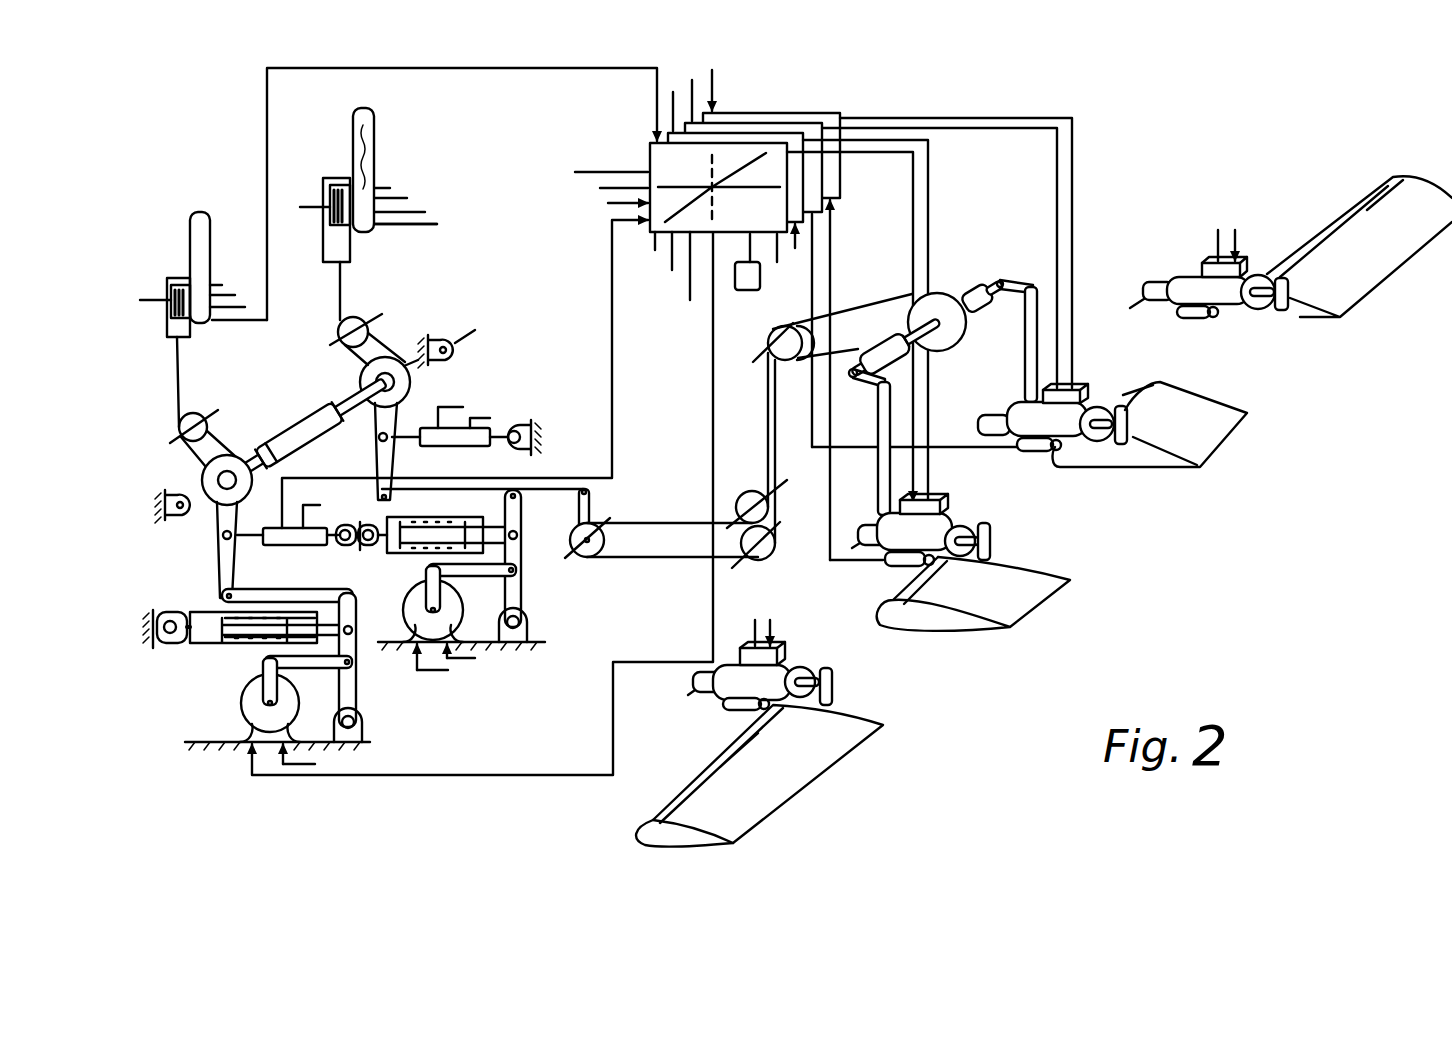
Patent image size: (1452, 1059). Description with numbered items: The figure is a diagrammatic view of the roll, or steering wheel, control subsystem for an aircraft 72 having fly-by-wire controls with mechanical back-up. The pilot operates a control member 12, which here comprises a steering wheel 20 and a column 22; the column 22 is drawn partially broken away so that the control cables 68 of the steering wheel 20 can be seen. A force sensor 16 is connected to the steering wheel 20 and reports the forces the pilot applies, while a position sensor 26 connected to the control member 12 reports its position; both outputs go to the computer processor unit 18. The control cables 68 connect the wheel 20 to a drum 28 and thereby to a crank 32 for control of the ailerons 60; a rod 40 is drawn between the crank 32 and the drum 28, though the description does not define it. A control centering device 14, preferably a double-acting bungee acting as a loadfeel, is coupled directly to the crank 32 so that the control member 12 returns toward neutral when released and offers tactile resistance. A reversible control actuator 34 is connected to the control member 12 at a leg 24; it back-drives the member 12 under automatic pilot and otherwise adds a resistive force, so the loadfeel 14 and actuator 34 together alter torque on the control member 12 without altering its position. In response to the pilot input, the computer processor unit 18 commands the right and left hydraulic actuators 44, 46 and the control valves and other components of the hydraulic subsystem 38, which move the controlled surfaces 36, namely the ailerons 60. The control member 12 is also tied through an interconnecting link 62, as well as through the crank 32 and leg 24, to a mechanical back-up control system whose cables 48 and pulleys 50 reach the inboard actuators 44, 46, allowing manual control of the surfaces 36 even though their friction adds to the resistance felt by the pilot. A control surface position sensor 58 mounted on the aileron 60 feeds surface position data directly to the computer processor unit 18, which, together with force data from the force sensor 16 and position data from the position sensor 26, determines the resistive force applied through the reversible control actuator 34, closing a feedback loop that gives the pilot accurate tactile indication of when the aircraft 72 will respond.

The control member 12 is at (382, 128).
The control centering device 14 is at (417, 552).
The force sensor 16 is at (386, 228).
The computer processor unit 18 is at (788, 115).
The steering wheel 20 is at (208, 236).
The column 22 is at (320, 233).
The leg 24 is at (358, 683).
The position sensor 26 is at (455, 432).
The drum 28 is at (405, 365).
The crank 32 is at (222, 573).
The reversible control actuator 34 is at (243, 712).
The controlled surfaces 36 is at (1222, 462).
The hydraulic subsystem 38 is at (1080, 372).
The push rod 40 is at (288, 440).
The right hydraulic actuator 44 is at (1088, 392).
The left hydraulic actuator 46 is at (948, 515).
The cables 48 is at (643, 562).
The pulleys 50 is at (608, 522).
The control surface position sensor 58 is at (1043, 453).
The ailerons 60 is at (1033, 605).
The interconnecting link 62 is at (543, 485).
The control cables 68 is at (343, 290).
The aircraft 72 is at (425, 804).